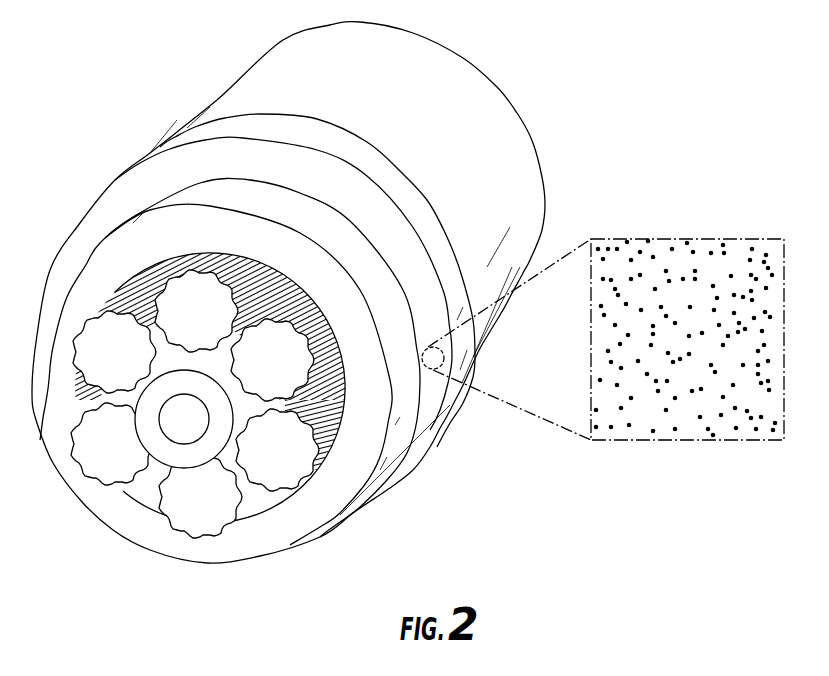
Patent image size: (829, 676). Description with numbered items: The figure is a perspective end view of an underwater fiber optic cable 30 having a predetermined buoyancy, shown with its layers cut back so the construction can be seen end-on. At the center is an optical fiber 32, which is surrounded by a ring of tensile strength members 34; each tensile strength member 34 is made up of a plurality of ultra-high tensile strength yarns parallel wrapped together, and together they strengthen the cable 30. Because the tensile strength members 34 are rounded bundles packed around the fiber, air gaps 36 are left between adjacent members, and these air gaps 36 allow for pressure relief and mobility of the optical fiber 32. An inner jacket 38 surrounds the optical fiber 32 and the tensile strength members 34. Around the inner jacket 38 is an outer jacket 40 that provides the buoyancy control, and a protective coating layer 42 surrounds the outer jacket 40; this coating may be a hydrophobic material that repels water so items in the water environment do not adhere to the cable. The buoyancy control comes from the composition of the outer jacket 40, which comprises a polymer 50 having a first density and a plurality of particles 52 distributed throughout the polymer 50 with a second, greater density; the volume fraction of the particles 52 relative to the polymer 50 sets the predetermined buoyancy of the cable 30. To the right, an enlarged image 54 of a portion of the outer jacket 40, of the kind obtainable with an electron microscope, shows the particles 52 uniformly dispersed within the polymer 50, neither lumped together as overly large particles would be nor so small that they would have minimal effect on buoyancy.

The underwater fiber optic cable 30 is at (92, 108).
The optical fiber 32 is at (187, 428).
The tensile strength members 34 is at (288, 468).
The air gaps 36 is at (248, 490).
The inner jacket 38 is at (68, 272).
The outer jacket 40 is at (117, 195).
The protective coating layer 42 is at (218, 93).
The polymer 50 is at (639, 239).
The particles 52 is at (711, 251).
The enlarged image 54 is at (794, 236).